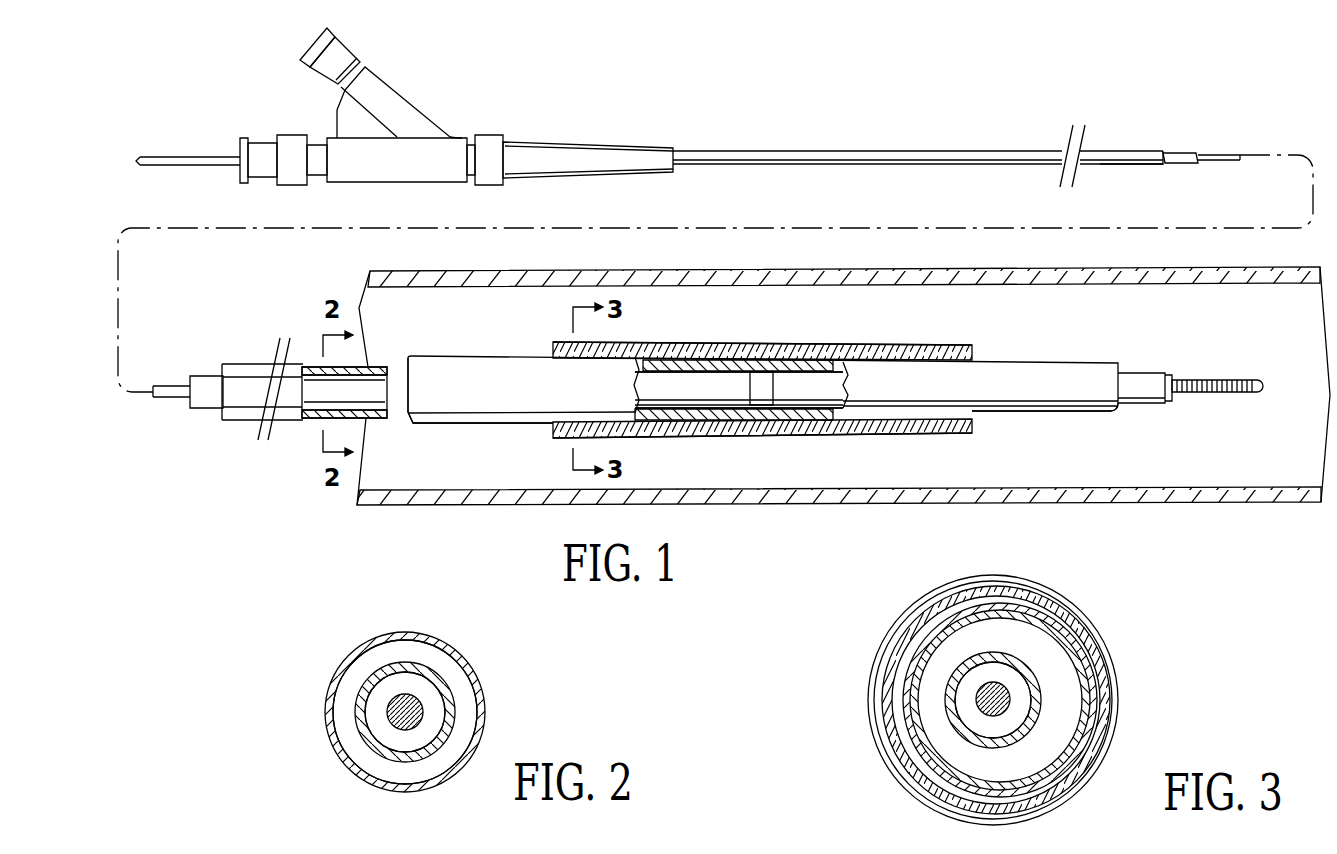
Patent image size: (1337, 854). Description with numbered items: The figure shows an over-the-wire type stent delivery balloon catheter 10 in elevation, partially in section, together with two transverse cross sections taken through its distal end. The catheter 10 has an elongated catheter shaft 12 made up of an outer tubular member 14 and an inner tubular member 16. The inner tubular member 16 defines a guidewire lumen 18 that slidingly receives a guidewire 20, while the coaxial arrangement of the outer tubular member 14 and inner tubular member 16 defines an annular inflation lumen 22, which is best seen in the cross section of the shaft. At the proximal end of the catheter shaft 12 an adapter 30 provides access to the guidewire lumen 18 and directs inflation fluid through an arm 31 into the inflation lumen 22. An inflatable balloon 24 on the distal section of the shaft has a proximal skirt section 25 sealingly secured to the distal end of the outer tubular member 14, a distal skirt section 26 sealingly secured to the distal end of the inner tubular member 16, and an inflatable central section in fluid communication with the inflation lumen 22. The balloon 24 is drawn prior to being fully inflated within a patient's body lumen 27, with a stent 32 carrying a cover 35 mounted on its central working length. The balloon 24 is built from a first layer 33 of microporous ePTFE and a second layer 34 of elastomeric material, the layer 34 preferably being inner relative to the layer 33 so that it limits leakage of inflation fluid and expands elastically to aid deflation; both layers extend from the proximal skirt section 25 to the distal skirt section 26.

In FIG. 1, the stent delivery balloon catheter 10 is at (968, 117).
In FIG. 1, the catheter shaft 12 is at (930, 167).
In FIG. 1, the outer tubular member 14 is at (1127, 165).
In FIG. 2, the outer tubular member 14 is at (353, 653).
In FIG. 1, the inner tubular member 16 is at (1178, 150).
In FIG. 2, the inner tubular member 16 is at (455, 722).
In FIG. 3, the inner tubular member 16 is at (1033, 727).
In FIG. 2, the guidewire lumen 18 is at (383, 723).
In FIG. 3, the guidewire lumen 18 is at (975, 720).
In FIG. 1, the guidewire 20 is at (207, 157).
In FIG. 2, the guidewire 20 is at (417, 698).
In FIG. 3, the guidewire 20 is at (1005, 685).
In FIG. 1, the annular inflation lumen 22 is at (320, 412).
In FIG. 2, the annular inflation lumen 22 is at (350, 698).
In FIG. 1, the inflatable balloon 24 is at (990, 385).
In FIG. 1, the proximal skirt section 25 is at (432, 428).
In FIG. 1, the distal skirt section 26 is at (1087, 417).
In FIG. 1, the body lumen 27 is at (1197, 327).
In FIG. 1, the adapter 30 is at (328, 136).
In FIG. 1, the arm 31 is at (417, 105).
In FIG. 1, the stent 32 is at (780, 357).
In FIG. 3, the stent 32 is at (888, 670).
In FIG. 1, the first layer 33 is at (740, 362).
In FIG. 3, the first layer 33 is at (1083, 667).
In FIG. 1, the second layer 34 is at (705, 360).
In FIG. 3, the second layer 34 is at (1077, 697).
In FIG. 1, the cover 35 is at (902, 352).
In FIG. 3, the cover 35 is at (892, 637).